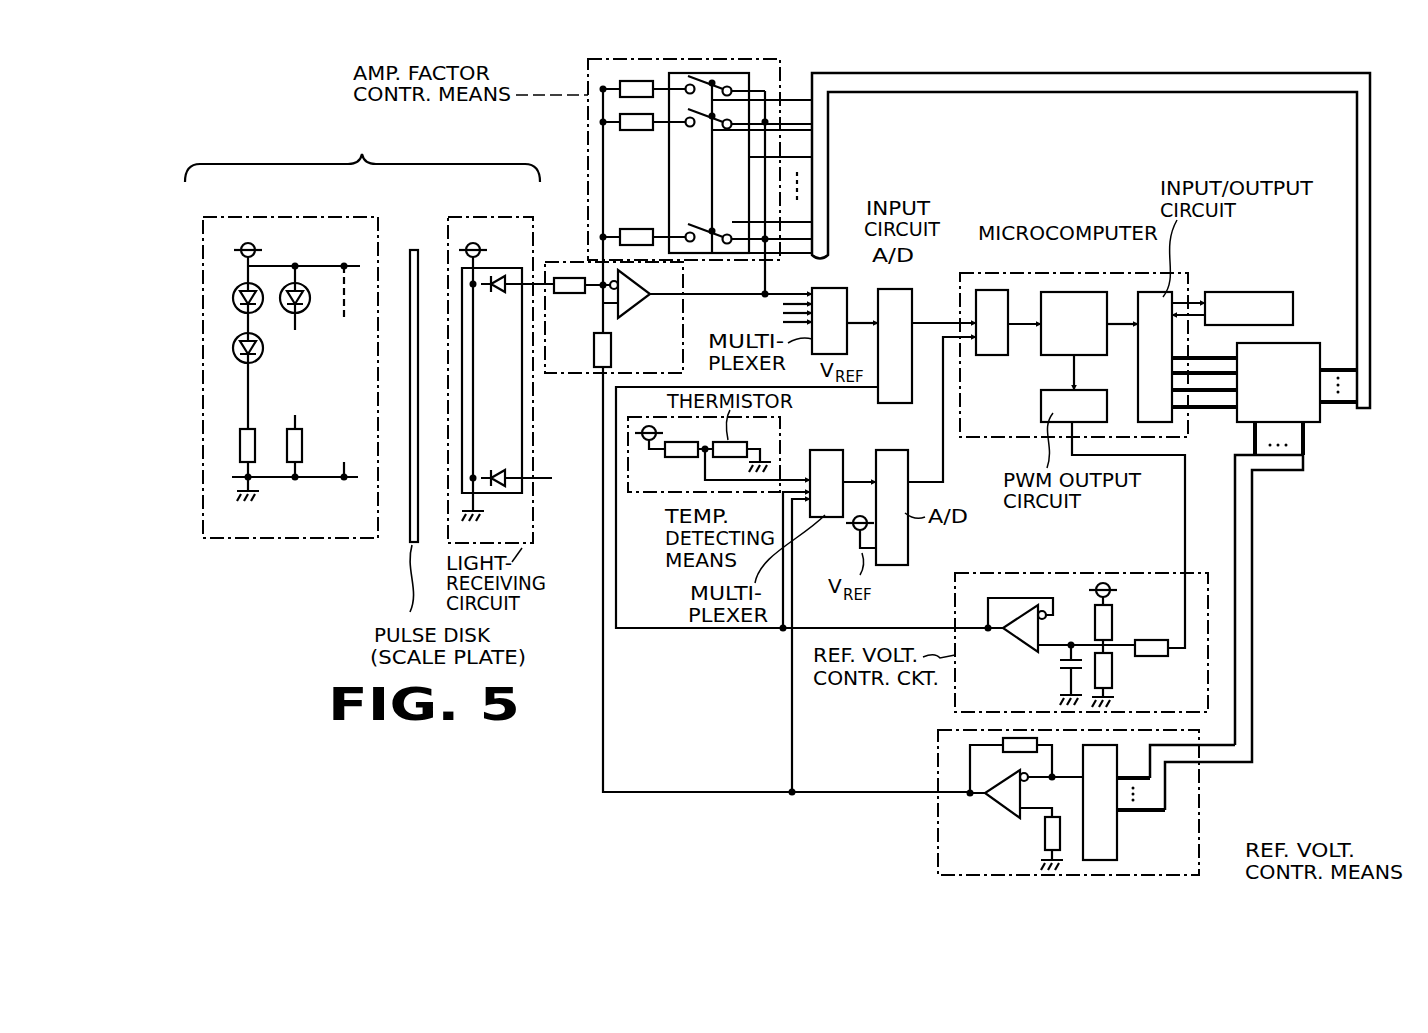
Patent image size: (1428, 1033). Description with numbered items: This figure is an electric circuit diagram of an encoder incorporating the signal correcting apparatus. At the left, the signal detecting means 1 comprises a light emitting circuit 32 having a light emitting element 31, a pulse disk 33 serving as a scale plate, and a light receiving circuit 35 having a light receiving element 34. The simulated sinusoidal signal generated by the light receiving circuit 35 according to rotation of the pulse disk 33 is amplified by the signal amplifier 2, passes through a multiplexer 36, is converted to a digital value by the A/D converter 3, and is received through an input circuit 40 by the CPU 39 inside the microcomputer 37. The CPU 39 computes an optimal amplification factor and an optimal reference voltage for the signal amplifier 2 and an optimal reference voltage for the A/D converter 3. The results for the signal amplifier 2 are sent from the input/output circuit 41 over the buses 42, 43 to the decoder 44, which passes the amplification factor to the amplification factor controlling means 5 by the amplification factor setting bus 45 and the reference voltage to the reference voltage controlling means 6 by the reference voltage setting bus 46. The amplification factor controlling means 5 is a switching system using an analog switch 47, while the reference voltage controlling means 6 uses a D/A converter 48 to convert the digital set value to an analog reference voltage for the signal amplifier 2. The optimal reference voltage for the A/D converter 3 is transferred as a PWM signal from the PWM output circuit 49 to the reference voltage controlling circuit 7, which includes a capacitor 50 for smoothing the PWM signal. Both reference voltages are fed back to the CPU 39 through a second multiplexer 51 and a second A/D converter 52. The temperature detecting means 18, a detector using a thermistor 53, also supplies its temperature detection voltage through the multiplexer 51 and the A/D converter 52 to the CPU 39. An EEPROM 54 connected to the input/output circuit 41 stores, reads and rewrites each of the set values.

The signal detecting means 1 is at (362, 158).
The signal amplifier 2 is at (548, 262).
The A/D converter 3 is at (900, 290).
The amplification factor controlling means 5 is at (700, 162).
The reference voltage controlling means 6 is at (1086, 802).
The reference voltage controlling circuit 7 is at (1081, 627).
The temperature detecting means 18 is at (722, 472).
The light emitting element 31 is at (238, 286).
The light emitting circuit 32 is at (290, 363).
The pulse disk 33 is at (414, 250).
The light receiving element 34 is at (505, 266).
The light receiving circuit 35 is at (501, 366).
The multiplexer 36 is at (836, 289).
The microcomputer 37 is at (1098, 444).
The CPU 39 is at (1040, 355).
The input circuit 40 is at (975, 303).
The input/output circuit 41 is at (1138, 362).
The bus 42 is at (1205, 356).
The bus 43 is at (1212, 415).
The decoder 44 is at (1314, 344).
The amplification factor setting bus 45 is at (1357, 243).
The reference voltage setting bus 46 is at (1255, 575).
The analog switch 47 is at (718, 70).
The D/A converter 48 is at (1120, 852).
The PWM output circuit 49 is at (1041, 405).
The capacitor 50 is at (1060, 669).
The multiplexer 51 is at (834, 452).
The A/D converter 52 is at (898, 452).
The thermistor 53 is at (745, 449).
The EEPROM 54 is at (1262, 294).